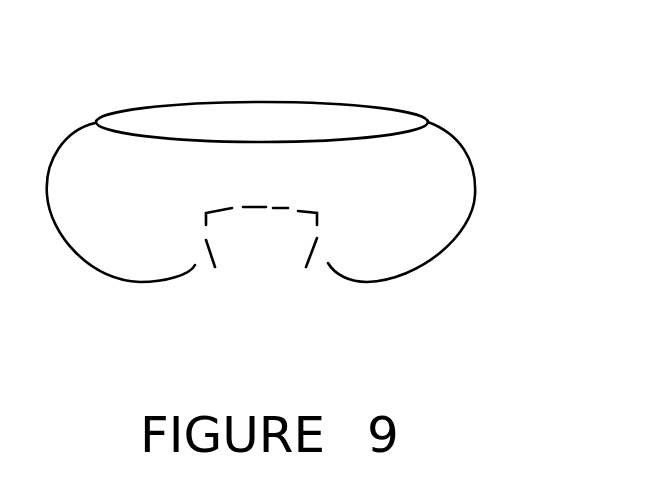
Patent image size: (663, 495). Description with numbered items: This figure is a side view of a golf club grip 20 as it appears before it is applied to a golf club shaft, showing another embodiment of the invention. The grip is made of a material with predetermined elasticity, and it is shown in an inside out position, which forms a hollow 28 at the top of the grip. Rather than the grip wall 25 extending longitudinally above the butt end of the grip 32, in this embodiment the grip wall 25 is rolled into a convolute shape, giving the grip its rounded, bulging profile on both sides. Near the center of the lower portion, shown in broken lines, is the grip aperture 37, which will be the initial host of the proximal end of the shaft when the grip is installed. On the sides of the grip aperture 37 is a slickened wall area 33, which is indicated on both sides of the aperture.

The golf club grip 20 is at (485, 152).
The hollow 28 is at (208, 117).
The grip wall 25 is at (112, 228).
The butt end of the grip 32 is at (248, 208).
The grip aperture 37 is at (264, 230).
The slickened wall area 33 is at (215, 267).